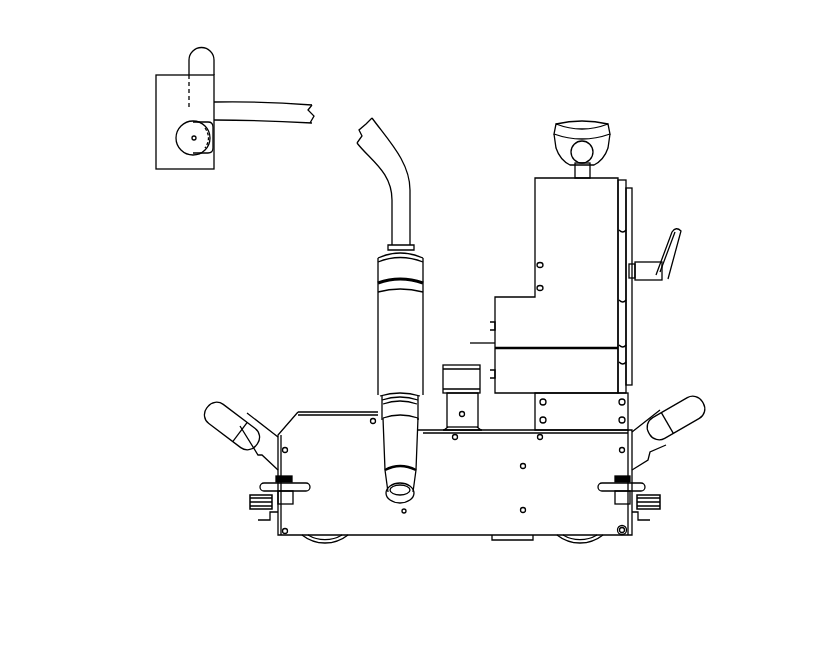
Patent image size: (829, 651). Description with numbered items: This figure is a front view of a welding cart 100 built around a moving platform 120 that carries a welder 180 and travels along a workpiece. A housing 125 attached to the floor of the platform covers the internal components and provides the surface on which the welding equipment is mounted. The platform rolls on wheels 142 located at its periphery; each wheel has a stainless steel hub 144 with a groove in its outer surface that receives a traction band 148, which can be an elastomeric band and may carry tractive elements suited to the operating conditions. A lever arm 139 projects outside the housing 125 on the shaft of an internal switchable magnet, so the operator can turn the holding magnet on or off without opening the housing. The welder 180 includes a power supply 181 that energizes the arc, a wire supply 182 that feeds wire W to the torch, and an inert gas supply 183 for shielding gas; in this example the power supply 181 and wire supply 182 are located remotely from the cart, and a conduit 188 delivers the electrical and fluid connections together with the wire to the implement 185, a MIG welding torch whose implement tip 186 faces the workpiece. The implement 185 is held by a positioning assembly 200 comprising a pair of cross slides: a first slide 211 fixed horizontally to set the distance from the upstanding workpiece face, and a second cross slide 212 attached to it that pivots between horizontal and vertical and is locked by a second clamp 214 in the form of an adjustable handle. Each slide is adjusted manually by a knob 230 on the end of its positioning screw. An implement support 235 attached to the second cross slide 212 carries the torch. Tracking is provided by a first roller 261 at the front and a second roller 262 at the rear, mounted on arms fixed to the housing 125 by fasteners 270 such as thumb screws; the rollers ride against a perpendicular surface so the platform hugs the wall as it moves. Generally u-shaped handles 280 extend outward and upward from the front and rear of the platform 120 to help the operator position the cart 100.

The cart 100 is at (88, 59).
The moving platform 120 is at (297, 514).
The housing 125 is at (321, 409).
The lever arm 139 is at (456, 364).
The wheels 142 is at (305, 540).
The hub 144 is at (340, 540).
The band 148 is at (352, 538).
The welder 180 is at (168, 58).
The power supply 181 is at (166, 161).
The wire supply 182 is at (208, 139).
The inert gas supply 183 is at (208, 59).
The implement 185 is at (415, 322).
The implement tip 186 is at (412, 500).
The conduit 188 is at (400, 175).
The positioning assembly 200 is at (636, 168).
The first slide 211 is at (624, 408).
The second cross slide 212 is at (628, 303).
The second clamp 214 is at (672, 251).
The knob 230 is at (579, 124).
The implement support 235 is at (608, 226).
The first roller 261 is at (642, 487).
The second roller 262 is at (300, 486).
The fasteners 270 is at (250, 497).
The handles 280 is at (212, 400).
The wire W is at (314, 112).